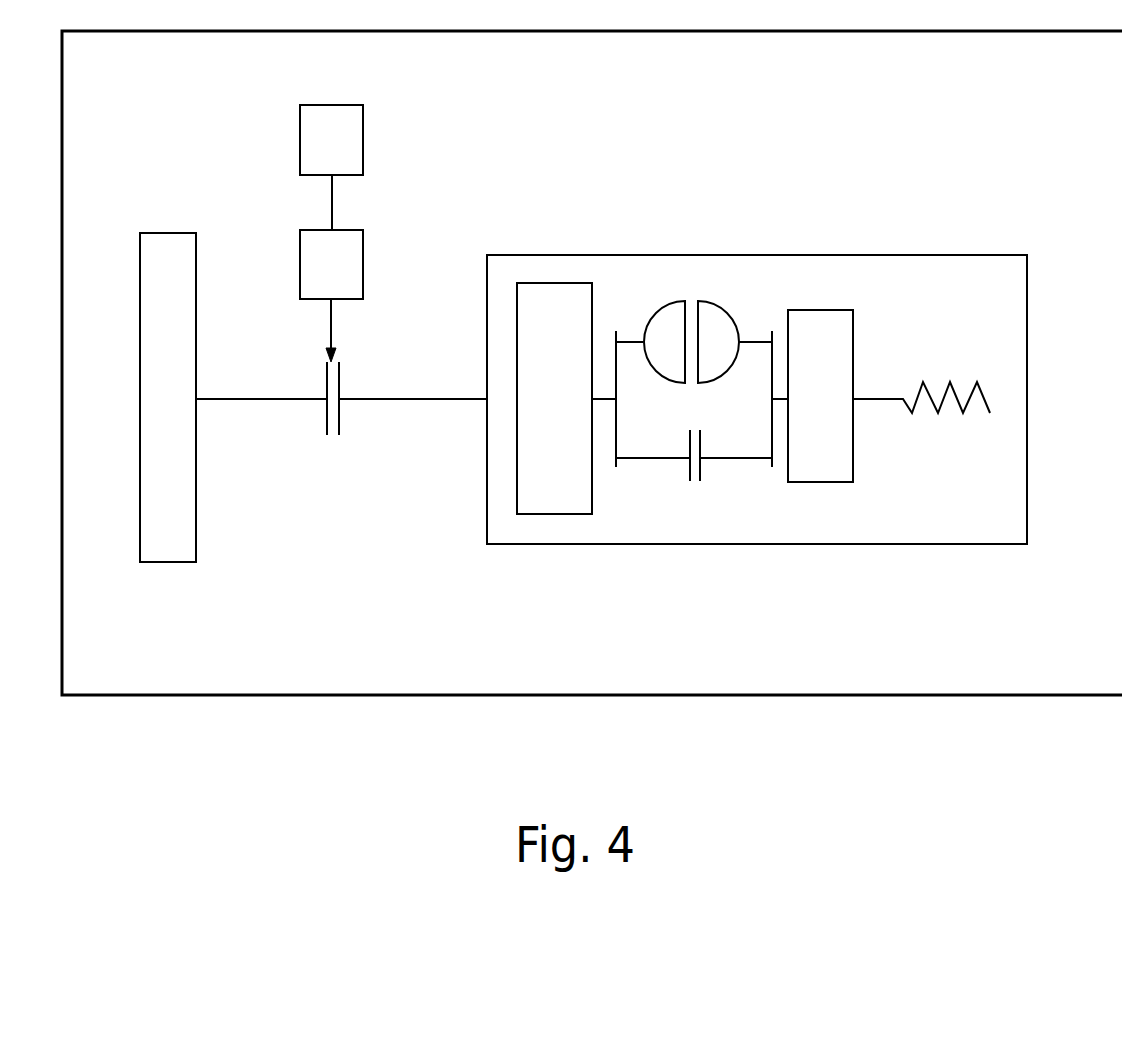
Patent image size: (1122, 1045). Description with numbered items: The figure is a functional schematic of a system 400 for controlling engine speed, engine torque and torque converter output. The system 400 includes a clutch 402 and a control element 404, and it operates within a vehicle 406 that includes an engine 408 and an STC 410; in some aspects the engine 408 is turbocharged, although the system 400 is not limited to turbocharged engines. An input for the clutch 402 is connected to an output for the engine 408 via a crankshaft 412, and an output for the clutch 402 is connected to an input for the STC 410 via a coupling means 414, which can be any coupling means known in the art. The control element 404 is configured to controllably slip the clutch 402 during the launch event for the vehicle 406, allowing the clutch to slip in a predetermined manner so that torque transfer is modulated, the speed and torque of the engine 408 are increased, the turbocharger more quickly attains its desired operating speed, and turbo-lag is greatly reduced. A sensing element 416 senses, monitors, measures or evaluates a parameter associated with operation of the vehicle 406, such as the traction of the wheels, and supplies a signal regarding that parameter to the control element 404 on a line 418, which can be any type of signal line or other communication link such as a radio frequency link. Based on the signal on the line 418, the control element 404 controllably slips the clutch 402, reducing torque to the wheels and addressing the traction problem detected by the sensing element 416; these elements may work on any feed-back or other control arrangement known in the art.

The system 400 is at (427, 202).
The clutch 402 is at (338, 430).
The control element 404 is at (331, 296).
The vehicle 406 is at (937, 695).
The engine 408 is at (167, 233).
The STC 410 is at (748, 255).
The crankshaft 412 is at (253, 400).
The coupling means 414 is at (438, 400).
The sensing element 416 is at (331, 167).
The line 418 is at (330, 197).